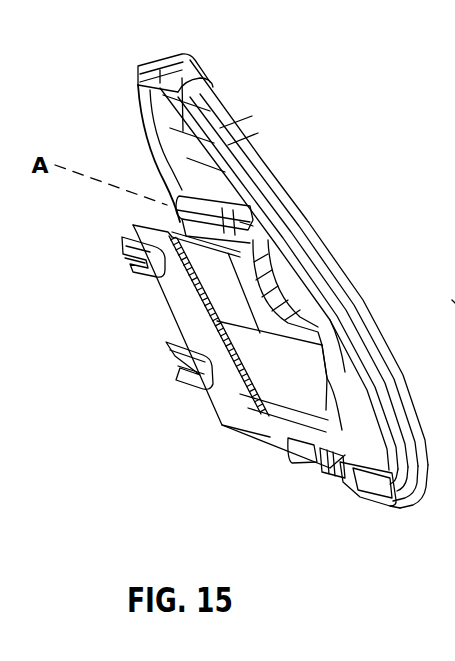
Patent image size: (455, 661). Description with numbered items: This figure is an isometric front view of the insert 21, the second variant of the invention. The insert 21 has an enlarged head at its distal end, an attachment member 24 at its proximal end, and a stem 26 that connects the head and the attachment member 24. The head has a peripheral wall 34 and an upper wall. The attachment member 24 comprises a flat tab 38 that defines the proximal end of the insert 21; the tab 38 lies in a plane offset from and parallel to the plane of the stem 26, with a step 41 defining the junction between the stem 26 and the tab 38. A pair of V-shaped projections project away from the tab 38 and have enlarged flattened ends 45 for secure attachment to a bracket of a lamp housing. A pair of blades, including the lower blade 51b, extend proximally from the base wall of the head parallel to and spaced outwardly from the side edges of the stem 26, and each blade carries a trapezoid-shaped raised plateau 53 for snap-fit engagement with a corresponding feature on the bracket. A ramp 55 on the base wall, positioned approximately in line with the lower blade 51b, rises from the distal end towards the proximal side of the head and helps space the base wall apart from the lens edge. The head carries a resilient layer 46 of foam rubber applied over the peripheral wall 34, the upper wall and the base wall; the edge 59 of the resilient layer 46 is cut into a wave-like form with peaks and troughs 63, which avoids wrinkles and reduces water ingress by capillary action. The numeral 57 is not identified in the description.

The insert 21 is at (267, 94).
The attachment member 24 is at (125, 228).
The stem 26 is at (278, 403).
The peripheral wall 34 is at (163, 66).
The flat tab 38 is at (173, 308).
The step 41 is at (168, 212).
The enlarged flattened ends 45 is at (127, 263).
The resilient layer 46 is at (293, 247).
The blade 51b is at (293, 447).
The raised plateau 53 is at (198, 200).
The ramp 55 is at (360, 485).
The side wall 57 is at (454, 152).
The edge 59 is at (292, 322).
The troughs 63 is at (333, 360).